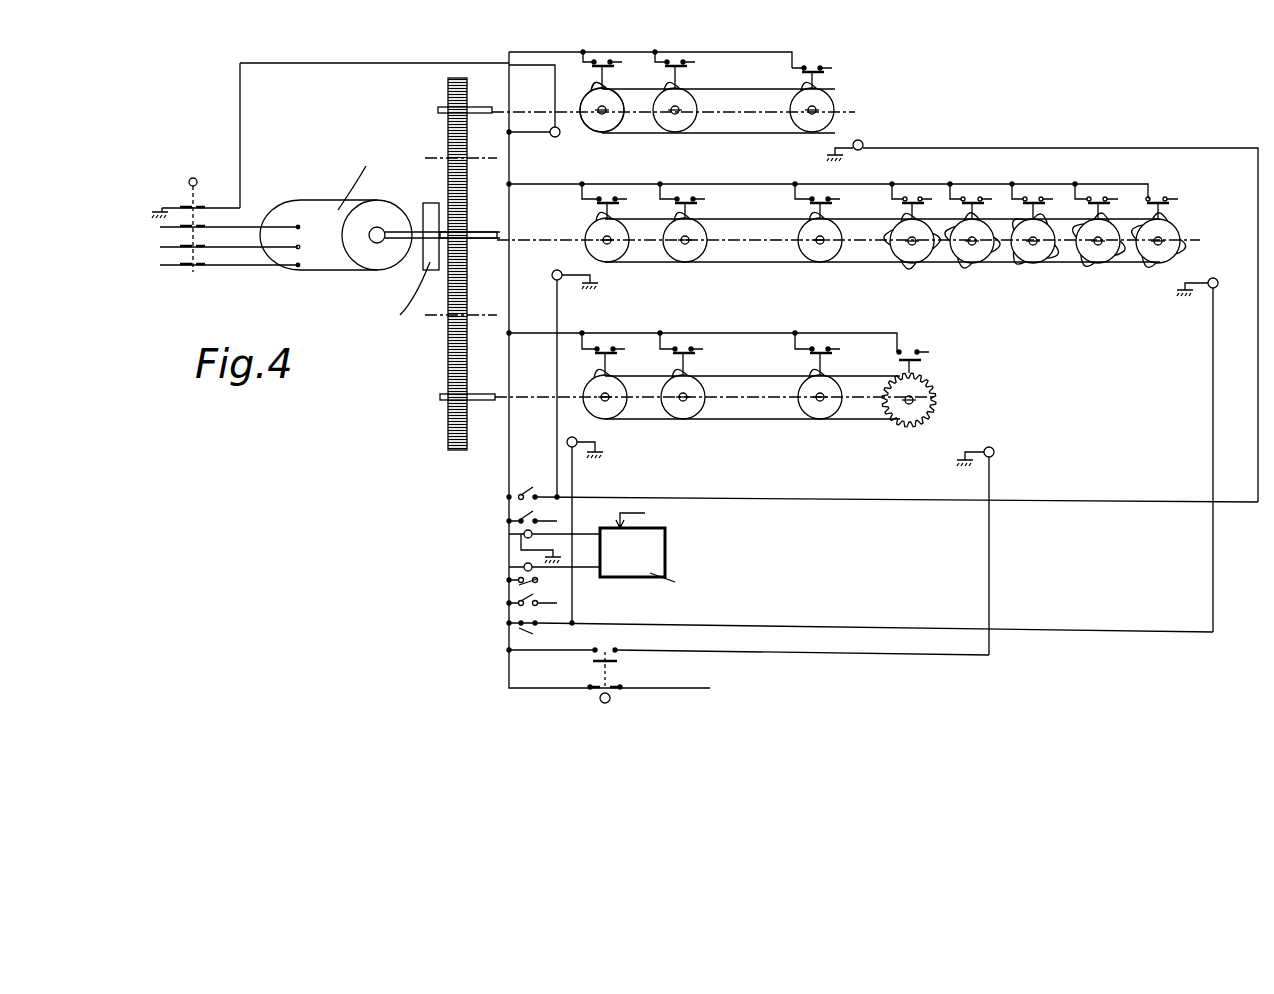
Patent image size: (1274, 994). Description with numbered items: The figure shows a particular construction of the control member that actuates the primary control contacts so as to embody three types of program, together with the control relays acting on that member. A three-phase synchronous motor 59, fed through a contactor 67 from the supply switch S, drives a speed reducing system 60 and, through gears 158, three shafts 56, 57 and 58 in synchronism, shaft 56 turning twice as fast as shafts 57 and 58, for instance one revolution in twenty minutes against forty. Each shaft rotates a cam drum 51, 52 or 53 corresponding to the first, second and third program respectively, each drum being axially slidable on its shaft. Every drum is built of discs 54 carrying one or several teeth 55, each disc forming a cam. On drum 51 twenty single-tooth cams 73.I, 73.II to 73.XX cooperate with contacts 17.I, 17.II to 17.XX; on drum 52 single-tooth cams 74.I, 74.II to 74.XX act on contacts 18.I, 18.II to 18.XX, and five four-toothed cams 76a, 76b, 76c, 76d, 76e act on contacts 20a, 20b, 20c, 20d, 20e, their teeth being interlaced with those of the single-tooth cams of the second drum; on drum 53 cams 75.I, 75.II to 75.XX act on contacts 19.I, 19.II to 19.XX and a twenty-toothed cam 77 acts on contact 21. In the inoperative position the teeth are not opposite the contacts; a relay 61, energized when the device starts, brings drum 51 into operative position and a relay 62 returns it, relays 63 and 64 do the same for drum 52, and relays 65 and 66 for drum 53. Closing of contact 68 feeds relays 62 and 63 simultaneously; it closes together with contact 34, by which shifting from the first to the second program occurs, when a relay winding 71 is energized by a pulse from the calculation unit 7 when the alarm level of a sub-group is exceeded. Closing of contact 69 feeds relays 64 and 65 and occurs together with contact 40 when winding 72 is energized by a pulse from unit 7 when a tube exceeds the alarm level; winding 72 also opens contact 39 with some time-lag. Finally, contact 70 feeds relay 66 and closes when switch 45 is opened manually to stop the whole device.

The main switch S is at (225, 237).
The contactor 67 is at (193, 178).
The three-phase synchronous motor 59 is at (307, 212).
The speed reducing system 60 is at (431, 205).
The gears 158 is at (469, 178).
The shaft 56 is at (478, 107).
The shaft 57 is at (481, 232).
The shaft 58 is at (480, 394).
The relay 61 is at (553, 137).
The relay 62 is at (861, 140).
The relay 63 is at (554, 271).
The relay 64 is at (1216, 279).
The relay 65 is at (571, 437).
The relay 66 is at (993, 449).
The cam drum 51 is at (734, 95).
The cam drum 52 is at (750, 226).
The cam drum 53 is at (730, 380).
The disc 54 is at (591, 100).
The tooth 55 is at (604, 90).
The contact 17.I is at (602, 58).
The contact 17.II is at (675, 58).
The contact 17.XX is at (812, 64).
The contact 18.I is at (607, 195).
The contact 18.II is at (685, 195).
The contact 18.XX is at (820, 195).
The contact 19.I is at (605, 345).
The contact 19.II is at (683, 345).
The contact 19.XX is at (820, 345).
The contact 20a is at (912, 195).
The contact 20b is at (972, 195).
The contact 20c is at (1033, 195).
The contact 20d is at (1098, 195).
The contact 20e is at (1156, 195).
The contact 21 is at (908, 352).
The cam 73.I is at (596, 128).
The cam 73.II is at (672, 128).
The cam 73.XX is at (798, 128).
The cam 74.I is at (614, 256).
The cam 74.II is at (690, 256).
The cam 74.XX is at (814, 258).
The cam 75.I is at (615, 414).
The cam 75.II is at (692, 414).
The cam 75.XX is at (812, 418).
The cam 76a is at (903, 262).
The cam 76b is at (963, 262).
The cam 76c is at (1026, 262).
The cam 76d is at (1094, 262).
The cam 76e is at (1148, 258).
The cam 77 is at (925, 387).
The contact 68 is at (531, 488).
The contact 34 is at (534, 512).
The relay winding 71 is at (523, 534).
The winding 72 is at (524, 567).
The contact 40 is at (517, 584).
The contact 39 is at (536, 600).
The contact 69 is at (528, 632).
The contact 70 is at (592, 662).
The switch 45 is at (623, 690).
The calculation unit 7 is at (650, 551).